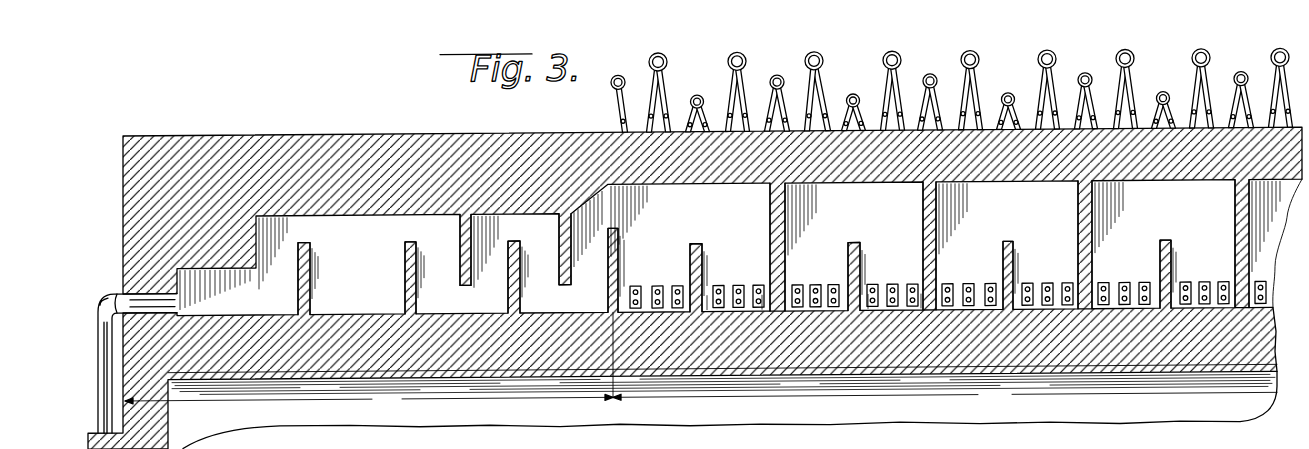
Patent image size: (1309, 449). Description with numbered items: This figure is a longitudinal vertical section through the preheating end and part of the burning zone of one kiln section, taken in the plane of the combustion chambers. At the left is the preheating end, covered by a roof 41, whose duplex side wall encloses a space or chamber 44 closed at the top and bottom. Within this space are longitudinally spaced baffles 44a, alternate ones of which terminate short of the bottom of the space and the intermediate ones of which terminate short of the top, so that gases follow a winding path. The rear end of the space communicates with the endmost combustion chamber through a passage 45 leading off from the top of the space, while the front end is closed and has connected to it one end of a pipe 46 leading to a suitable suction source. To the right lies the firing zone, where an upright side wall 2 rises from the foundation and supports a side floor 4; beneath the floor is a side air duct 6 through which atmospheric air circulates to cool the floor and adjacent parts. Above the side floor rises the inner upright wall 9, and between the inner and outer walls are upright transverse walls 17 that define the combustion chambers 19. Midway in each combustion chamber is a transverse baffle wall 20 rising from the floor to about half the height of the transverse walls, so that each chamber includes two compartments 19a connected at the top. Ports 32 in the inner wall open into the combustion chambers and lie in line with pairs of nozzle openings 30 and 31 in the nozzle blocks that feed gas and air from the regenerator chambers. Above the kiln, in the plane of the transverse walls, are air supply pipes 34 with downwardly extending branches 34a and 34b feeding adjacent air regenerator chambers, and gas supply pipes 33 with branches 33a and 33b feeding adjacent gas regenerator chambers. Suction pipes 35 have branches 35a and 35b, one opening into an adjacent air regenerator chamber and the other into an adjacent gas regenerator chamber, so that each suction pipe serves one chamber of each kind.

The upright side wall 2 is at (1258, 418).
The side floor 4 is at (1277, 349).
The side air duct 6 is at (873, 398).
The inner upright wall 9 is at (1262, 228).
The upright transverse wall 17 is at (768, 236).
The combustion chamber 19 is at (1280, 258).
The compartment 19a is at (883, 274).
The transverse baffle wall 20 is at (697, 249).
The nozzle opening 30 is at (1030, 285).
The nozzle opening 31 is at (836, 285).
The port 32 is at (672, 290).
The gas supply pipe 33 is at (698, 99).
The gas pipe branch 33a is at (706, 120).
The gas pipe branch 33b is at (690, 120).
The air supply pipe 34 is at (617, 78).
The air pipe branch 34a is at (1093, 105).
The air pipe branch 34b is at (1078, 105).
The suction pipe 35 is at (658, 57).
The suction pipe branch 35a is at (823, 86).
The suction pipe branch 35b is at (826, 98).
The roof 41 is at (400, 159).
The space or chamber 44 is at (354, 266).
The baffle 44a is at (467, 290).
The passage 45 is at (612, 222).
The suction pipe 46 is at (115, 297).